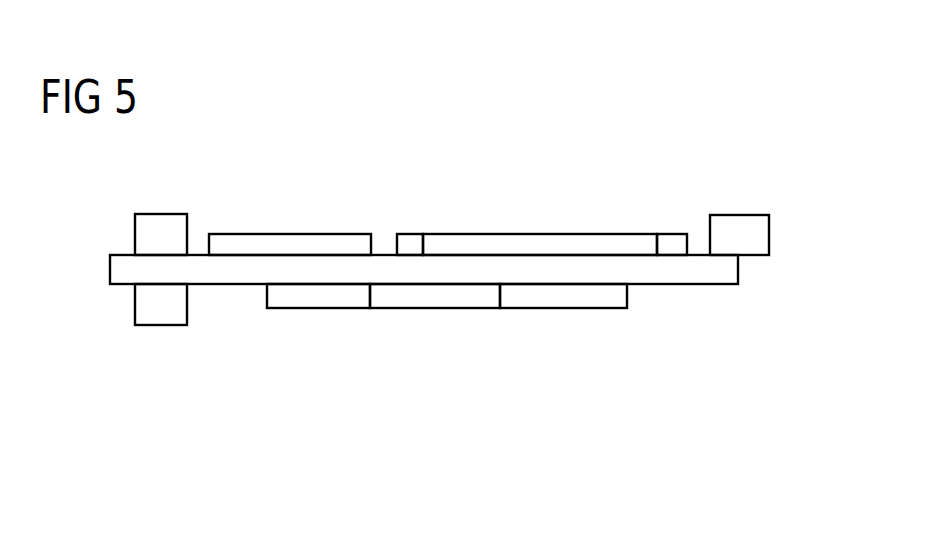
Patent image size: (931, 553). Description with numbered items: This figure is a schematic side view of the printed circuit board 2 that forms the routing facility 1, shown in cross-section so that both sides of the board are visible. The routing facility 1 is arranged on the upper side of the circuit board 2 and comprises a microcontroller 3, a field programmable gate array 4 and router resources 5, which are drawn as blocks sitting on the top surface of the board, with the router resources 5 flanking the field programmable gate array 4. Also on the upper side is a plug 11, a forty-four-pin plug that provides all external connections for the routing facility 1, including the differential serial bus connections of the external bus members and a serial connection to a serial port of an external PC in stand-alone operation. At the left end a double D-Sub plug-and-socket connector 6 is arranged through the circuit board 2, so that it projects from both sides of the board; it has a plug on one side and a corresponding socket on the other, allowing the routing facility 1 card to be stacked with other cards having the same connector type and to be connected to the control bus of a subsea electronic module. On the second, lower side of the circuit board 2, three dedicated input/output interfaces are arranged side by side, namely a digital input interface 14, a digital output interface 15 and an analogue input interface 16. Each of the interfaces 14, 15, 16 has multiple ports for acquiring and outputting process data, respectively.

The routing facility 1 is at (703, 96).
The printed circuit board 2 is at (110, 268).
The microcontroller 3 is at (330, 233).
The field programmable gate array 4 is at (592, 233).
The router resource 5 is at (413, 233).
The plug-and-socket connector 6 is at (153, 213).
The plug 11 is at (740, 214).
The digital input interface 14 is at (287, 309).
The digital output interface 15 is at (427, 309).
The analogue input interface 16 is at (563, 309).